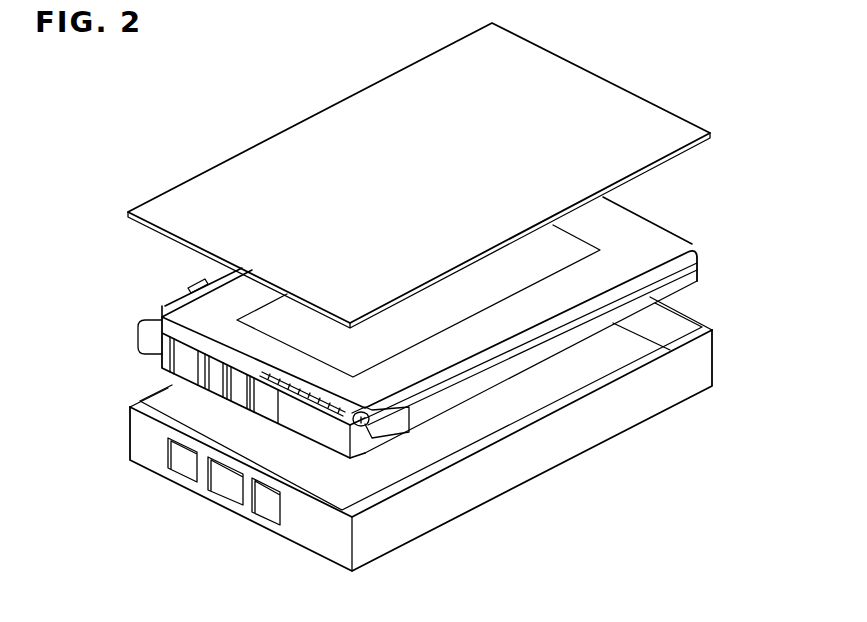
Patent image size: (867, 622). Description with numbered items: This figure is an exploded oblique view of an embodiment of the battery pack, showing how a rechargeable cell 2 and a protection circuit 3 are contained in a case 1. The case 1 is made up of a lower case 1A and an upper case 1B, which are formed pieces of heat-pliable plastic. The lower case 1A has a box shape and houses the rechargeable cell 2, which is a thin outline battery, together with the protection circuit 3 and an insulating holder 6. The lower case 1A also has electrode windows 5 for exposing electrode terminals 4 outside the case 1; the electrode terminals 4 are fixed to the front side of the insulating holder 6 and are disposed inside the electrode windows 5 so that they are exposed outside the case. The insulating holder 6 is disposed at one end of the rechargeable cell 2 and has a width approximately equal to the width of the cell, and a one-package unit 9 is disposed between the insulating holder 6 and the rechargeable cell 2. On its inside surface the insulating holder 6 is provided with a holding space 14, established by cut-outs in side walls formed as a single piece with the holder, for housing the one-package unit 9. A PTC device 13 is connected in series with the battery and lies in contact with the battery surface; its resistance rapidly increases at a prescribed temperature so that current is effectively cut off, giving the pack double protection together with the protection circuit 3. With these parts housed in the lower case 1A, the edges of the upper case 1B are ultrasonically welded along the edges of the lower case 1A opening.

The case 1 is at (732, 178).
The lower case 1A is at (710, 359).
The upper case 1B is at (644, 148).
The rechargeable cell 2 is at (493, 325).
The protection circuit 3 is at (327, 393).
The electrode terminals 4 is at (177, 355).
The electrode windows 5 is at (178, 468).
The insulating holder 6 is at (153, 327).
The one-package unit 9 is at (292, 396).
The PTC device 13 is at (200, 282).
The holding space 14 is at (363, 422).